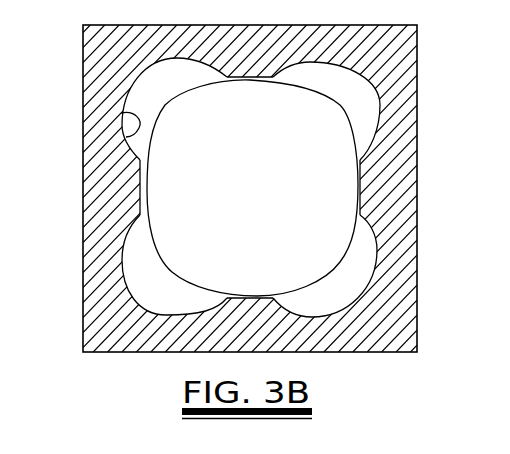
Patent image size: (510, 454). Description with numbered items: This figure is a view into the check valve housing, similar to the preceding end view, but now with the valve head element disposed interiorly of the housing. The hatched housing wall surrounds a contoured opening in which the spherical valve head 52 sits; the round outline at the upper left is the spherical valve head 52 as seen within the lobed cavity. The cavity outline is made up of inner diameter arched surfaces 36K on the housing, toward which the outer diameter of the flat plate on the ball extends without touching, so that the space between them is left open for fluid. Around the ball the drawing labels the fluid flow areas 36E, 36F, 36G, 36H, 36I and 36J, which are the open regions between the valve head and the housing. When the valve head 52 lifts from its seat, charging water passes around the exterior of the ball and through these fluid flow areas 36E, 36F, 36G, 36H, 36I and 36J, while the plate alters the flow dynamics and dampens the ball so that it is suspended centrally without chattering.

The fluid flow area 36E is at (165, 92).
The fluid flow area 36F is at (350, 102).
The fluid flow area 36G is at (162, 295).
The fluid flow area 36H is at (320, 310).
The fluid flow area 36I is at (142, 190).
The fluid flow area 36J is at (358, 205).
The inner diameter arched surface 36K is at (358, 185).
The spherical valve head 52 is at (128, 109).